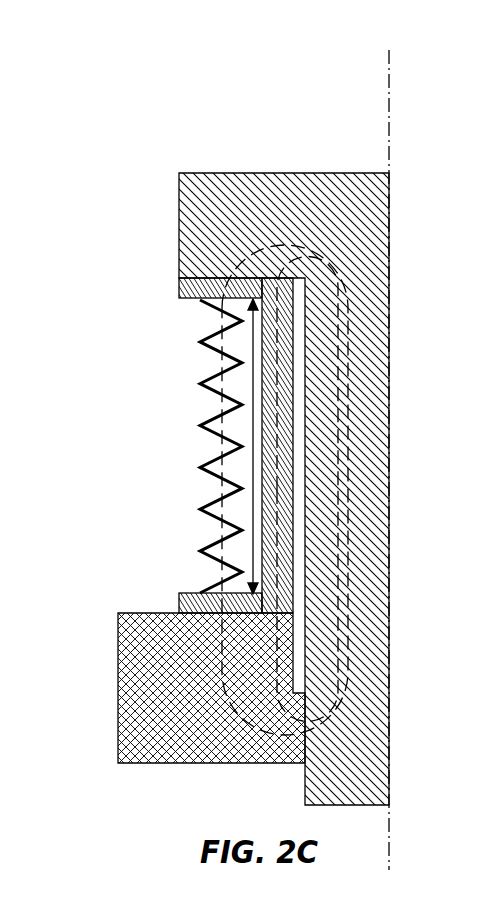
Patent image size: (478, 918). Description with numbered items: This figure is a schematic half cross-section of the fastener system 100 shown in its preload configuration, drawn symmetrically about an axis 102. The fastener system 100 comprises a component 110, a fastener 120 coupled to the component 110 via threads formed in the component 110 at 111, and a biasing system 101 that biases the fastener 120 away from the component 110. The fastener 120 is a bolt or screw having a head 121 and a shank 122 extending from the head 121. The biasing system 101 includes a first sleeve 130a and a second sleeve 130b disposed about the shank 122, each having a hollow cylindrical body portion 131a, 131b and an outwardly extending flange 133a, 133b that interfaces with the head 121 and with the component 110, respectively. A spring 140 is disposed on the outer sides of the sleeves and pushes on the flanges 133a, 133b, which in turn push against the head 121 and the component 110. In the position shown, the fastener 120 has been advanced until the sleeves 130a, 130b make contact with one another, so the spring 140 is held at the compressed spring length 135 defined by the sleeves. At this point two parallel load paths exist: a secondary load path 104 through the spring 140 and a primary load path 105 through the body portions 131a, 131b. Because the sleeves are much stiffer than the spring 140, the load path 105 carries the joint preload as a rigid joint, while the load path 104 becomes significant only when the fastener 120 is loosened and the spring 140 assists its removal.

The fastener system 100 is at (230, 78).
The biasing system 101 is at (127, 328).
The axis 102 is at (389, 81).
The load path 104 is at (222, 400).
The load path 105 is at (273, 473).
The component 110 is at (118, 690).
The threads 111 is at (301, 743).
The fastener 120 is at (283, 459).
The head 121 is at (179, 213).
The shank 122 is at (388, 478).
The sleeve 130a is at (232, 346).
The sleeve 130b is at (232, 549).
The body portion 131a is at (283, 362).
The body portion 131b is at (283, 535).
The flange 133a is at (180, 288).
The flange 133b is at (180, 600).
The compressed spring length 135 is at (252, 423).
The spring 140 is at (270, 465).